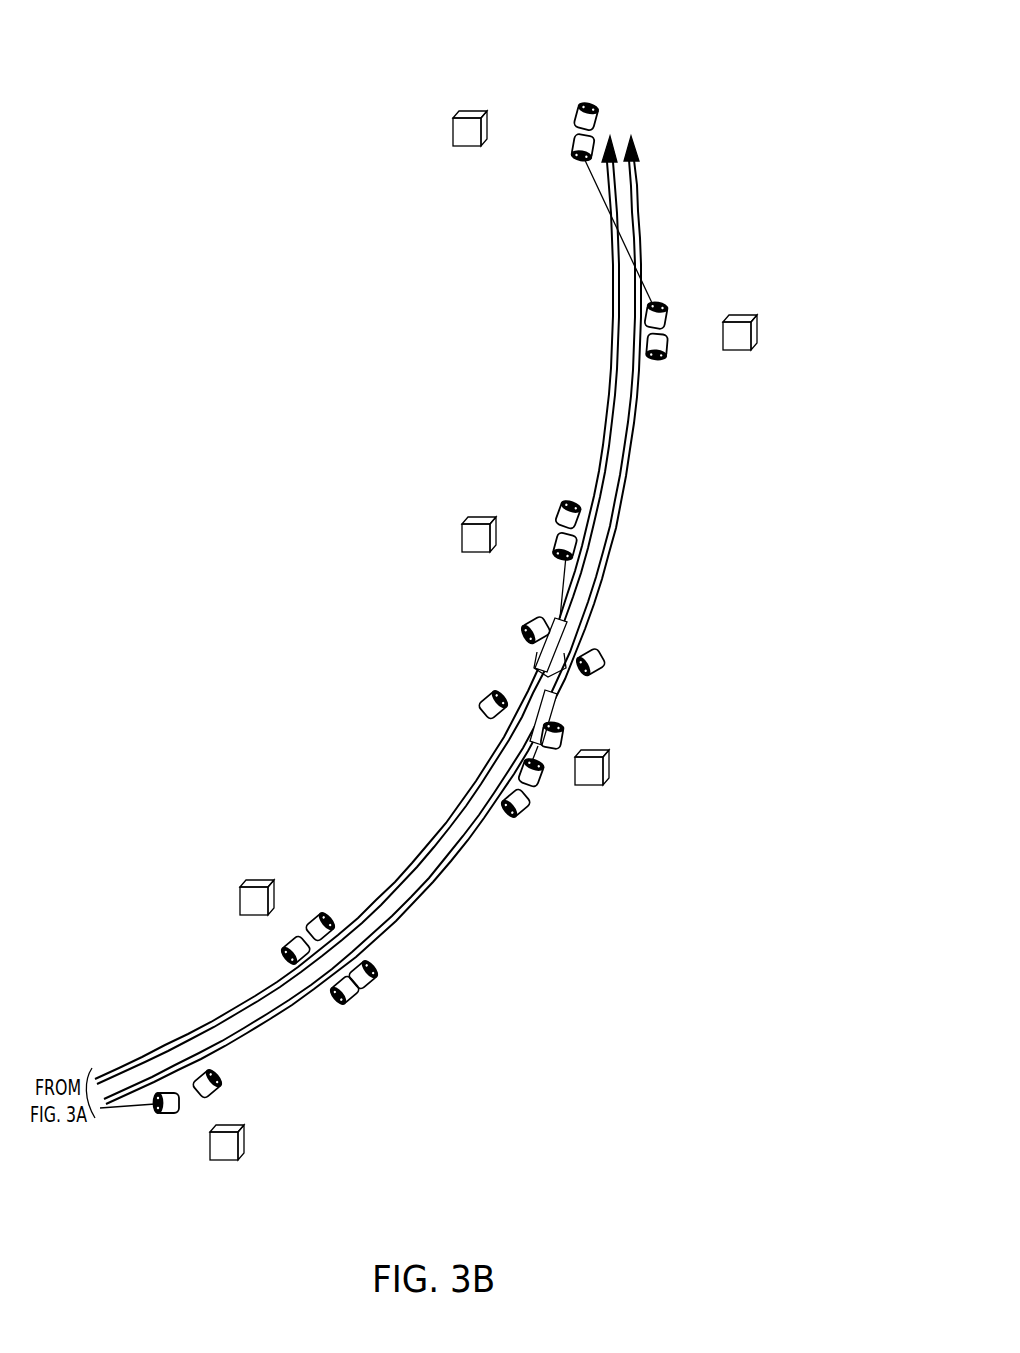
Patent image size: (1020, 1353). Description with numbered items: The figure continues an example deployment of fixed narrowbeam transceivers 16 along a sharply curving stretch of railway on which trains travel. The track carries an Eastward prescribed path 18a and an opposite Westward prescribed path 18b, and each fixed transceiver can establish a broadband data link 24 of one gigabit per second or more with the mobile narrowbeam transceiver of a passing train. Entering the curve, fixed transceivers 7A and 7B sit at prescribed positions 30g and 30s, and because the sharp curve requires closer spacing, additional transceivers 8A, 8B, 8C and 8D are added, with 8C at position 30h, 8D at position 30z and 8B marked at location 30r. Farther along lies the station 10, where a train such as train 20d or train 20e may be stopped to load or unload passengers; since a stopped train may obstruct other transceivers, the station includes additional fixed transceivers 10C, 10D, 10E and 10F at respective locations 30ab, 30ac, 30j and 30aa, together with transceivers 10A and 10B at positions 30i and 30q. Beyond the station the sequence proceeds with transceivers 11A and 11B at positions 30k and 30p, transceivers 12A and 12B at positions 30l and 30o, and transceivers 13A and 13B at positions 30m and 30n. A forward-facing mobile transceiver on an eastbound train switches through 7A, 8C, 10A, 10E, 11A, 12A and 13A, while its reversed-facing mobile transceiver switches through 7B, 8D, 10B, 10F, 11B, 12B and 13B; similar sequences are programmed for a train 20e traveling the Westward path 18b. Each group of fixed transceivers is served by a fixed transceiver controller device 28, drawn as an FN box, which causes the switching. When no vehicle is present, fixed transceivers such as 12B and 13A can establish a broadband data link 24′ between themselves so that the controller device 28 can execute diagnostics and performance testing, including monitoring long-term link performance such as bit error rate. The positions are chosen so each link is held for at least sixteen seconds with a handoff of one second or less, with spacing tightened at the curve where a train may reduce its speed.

The fixed narrowbeam transceiver 16 is at (390, 585).
The Eastward prescribed path 18a is at (641, 195).
The Westward prescribed path 18b is at (614, 307).
The broadband data link 24 is at (140, 1110).
The broadband data link between fixed transceivers 24′ is at (655, 285).
The fixed transceiver controller device 28 is at (468, 111).
The station 10 is at (492, 662).
The train 20e is at (488, 602).
The train D 20d is at (628, 710).
The fixed narrowbeam transceiver 13B is at (568, 116).
The fixed narrowbeam transceiver 13A is at (566, 147).
The fixed narrowbeam transceiver 12B is at (670, 315).
The fixed narrowbeam transceiver 12A is at (671, 346).
The fixed narrowbeam transceiver 11B is at (552, 514).
The fixed narrowbeam transceiver 11A is at (550, 547).
The station fixed narrowbeam transceiver 10E is at (521, 629).
The station fixed narrowbeam transceiver 10D is at (602, 662).
The station fixed narrowbeam transceiver 10F is at (485, 700).
The station fixed narrowbeam transceiver 10C is at (565, 736).
The fixed narrowbeam transceiver 10B is at (545, 773).
The fixed narrowbeam transceiver 10A is at (524, 806).
The additional fixed narrowbeam transceiver 8B is at (315, 916).
The additional fixed narrowbeam transceiver 8A is at (283, 950).
The additional fixed narrowbeam transceiver 8D is at (372, 979).
The additional fixed narrowbeam transceiver 8C is at (346, 1002).
The fixed narrowbeam transceiver 7B is at (208, 1095).
The fixed narrowbeam transceiver 7A is at (172, 1114).
The prescribed position of transceiver 13B 30n is at (608, 111).
The prescribed position of transceiver 13A 30m is at (553, 160).
The prescribed position of transceiver 12B 30o is at (665, 298).
The prescribed position of transceiver 12A 30l is at (668, 360).
The prescribed position of transceiver 11B 30p is at (552, 503).
The prescribed position of transceiver 11A 30k is at (579, 547).
The location of station transceiver 10E 30j is at (487, 630).
The location of station transceiver 10D 30ac is at (640, 665).
The location of station transceiver 10F 30aa is at (478, 714).
The location of station transceiver 10C 30ab is at (600, 737).
The prescribed position of transceiver 10A 30i is at (520, 815).
The prescribed position of transceiver 10B 30q is at (547, 796).
The direction arrow 30r is at (326, 905).
The prescribed position of transceiver 8D 30z is at (392, 987).
The prescribed position of transceiver 8C 30h is at (350, 1038).
The prescribed position of transceiver 7B 30s is at (191, 1061).
The prescribed position of transceiver 7A 30g is at (163, 1120).